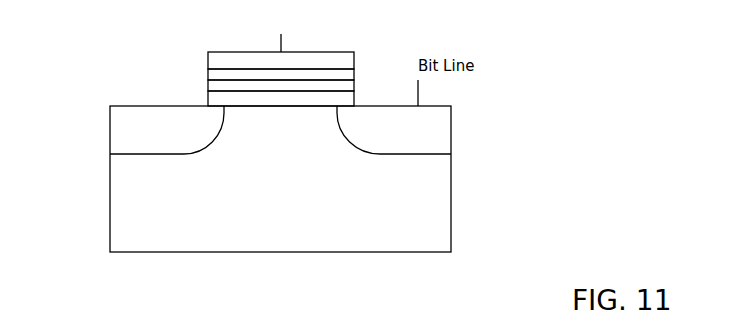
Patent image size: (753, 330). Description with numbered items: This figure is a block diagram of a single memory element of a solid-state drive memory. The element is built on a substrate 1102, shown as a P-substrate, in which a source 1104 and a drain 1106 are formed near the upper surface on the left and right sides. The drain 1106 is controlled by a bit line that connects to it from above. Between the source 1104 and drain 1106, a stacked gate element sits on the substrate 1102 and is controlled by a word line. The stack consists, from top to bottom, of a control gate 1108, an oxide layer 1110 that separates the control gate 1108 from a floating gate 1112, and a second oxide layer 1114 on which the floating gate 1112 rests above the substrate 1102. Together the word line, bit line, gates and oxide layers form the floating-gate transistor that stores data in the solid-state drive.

The substrate 1102 is at (451, 189).
The source 1104 is at (110, 133).
The drain 1106 is at (451, 124).
The control gate 1108 is at (354, 62).
The oxide layer 1110 is at (208, 69).
The floating gate 1112 is at (354, 86).
The oxide layer 1114 is at (208, 91).